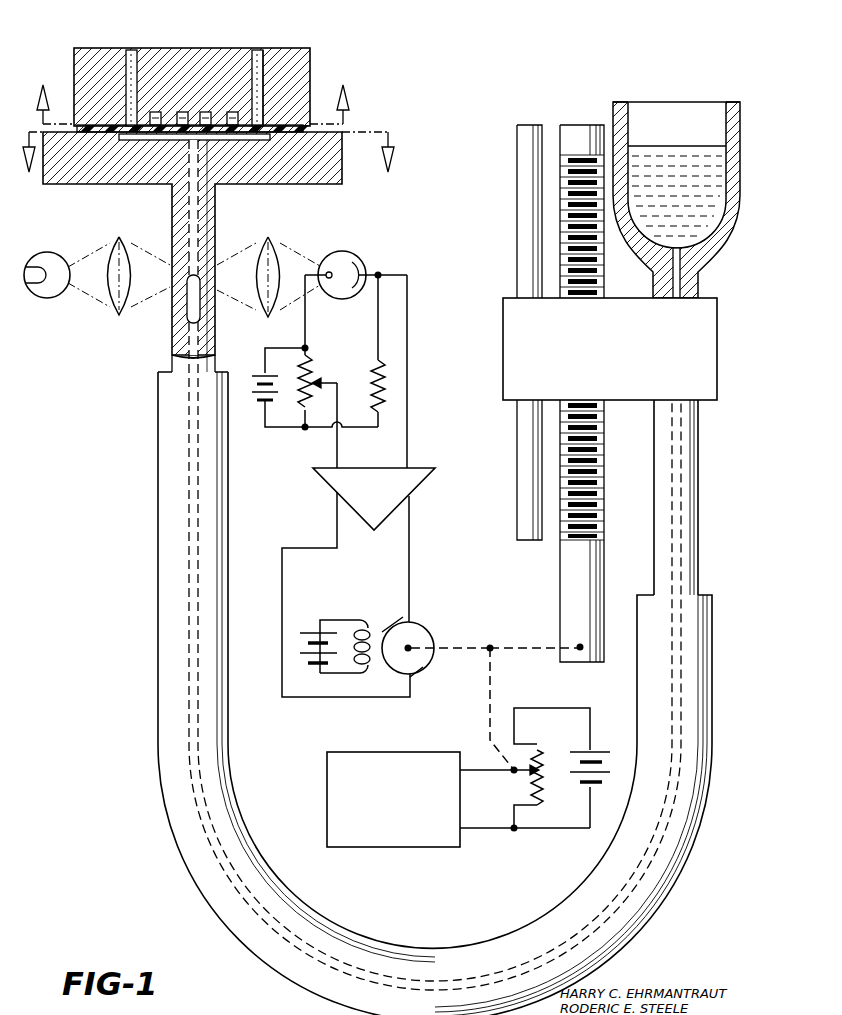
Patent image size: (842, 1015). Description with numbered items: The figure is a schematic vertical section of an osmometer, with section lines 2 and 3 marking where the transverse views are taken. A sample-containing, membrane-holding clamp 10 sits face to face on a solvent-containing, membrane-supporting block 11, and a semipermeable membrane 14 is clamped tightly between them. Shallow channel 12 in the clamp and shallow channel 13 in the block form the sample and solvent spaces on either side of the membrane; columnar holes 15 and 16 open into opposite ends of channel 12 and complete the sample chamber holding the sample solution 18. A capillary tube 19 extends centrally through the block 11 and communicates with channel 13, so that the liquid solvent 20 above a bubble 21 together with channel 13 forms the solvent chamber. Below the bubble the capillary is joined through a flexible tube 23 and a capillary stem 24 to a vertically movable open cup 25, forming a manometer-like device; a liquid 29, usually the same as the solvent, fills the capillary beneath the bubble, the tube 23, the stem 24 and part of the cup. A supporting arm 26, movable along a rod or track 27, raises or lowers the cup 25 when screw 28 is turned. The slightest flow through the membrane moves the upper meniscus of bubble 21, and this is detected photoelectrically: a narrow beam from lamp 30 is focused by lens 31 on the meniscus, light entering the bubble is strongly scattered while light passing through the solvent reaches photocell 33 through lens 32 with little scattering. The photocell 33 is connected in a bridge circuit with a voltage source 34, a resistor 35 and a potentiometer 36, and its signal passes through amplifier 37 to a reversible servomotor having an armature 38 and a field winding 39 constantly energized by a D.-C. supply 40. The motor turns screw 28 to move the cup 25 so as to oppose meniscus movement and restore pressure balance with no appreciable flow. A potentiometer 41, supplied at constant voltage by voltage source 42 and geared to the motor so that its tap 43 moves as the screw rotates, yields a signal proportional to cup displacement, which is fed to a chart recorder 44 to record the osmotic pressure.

The section line 2- 2 is at (198, 91).
The section line 3- 3 is at (214, 166).
The membrane-holding clamp 10 is at (311, 50).
The membrane-supporting block 11 is at (331, 182).
The channel 12 is at (157, 110).
The channel 13 is at (147, 137).
The semipermeable membrane 14 is at (292, 133).
The columnar hole 15 is at (121, 57).
The columnar hole 16 is at (265, 66).
The sample solution 18 is at (258, 52).
The capillary tube 19 is at (213, 222).
The liquid solvent 20 is at (190, 208).
The bubble 21 is at (190, 306).
The flexible tube 23 is at (158, 490).
The capillary stem 24 is at (699, 278).
The open cup 25 is at (739, 205).
The supporting arm 26 is at (717, 365).
The rod or track 27 is at (517, 265).
The screw 28 is at (560, 580).
The liquid 29 is at (193, 343).
The lamp 30 is at (50, 252).
The lens 31 is at (116, 242).
The lens 32 is at (271, 239).
The photocell 33 is at (355, 256).
The voltage source 34 is at (256, 372).
The resistor 35 is at (373, 372).
The potentiometer 36 is at (311, 371).
The amplifier 37 is at (328, 484).
The armature 38 is at (420, 626).
The field winding 39 is at (373, 625).
The D.-C. supply 40 is at (300, 640).
The potentiometer 41 is at (537, 742).
The voltage source 42 is at (598, 757).
The potentiometer tap 43 is at (523, 779).
The chart recorder 44 is at (400, 847).